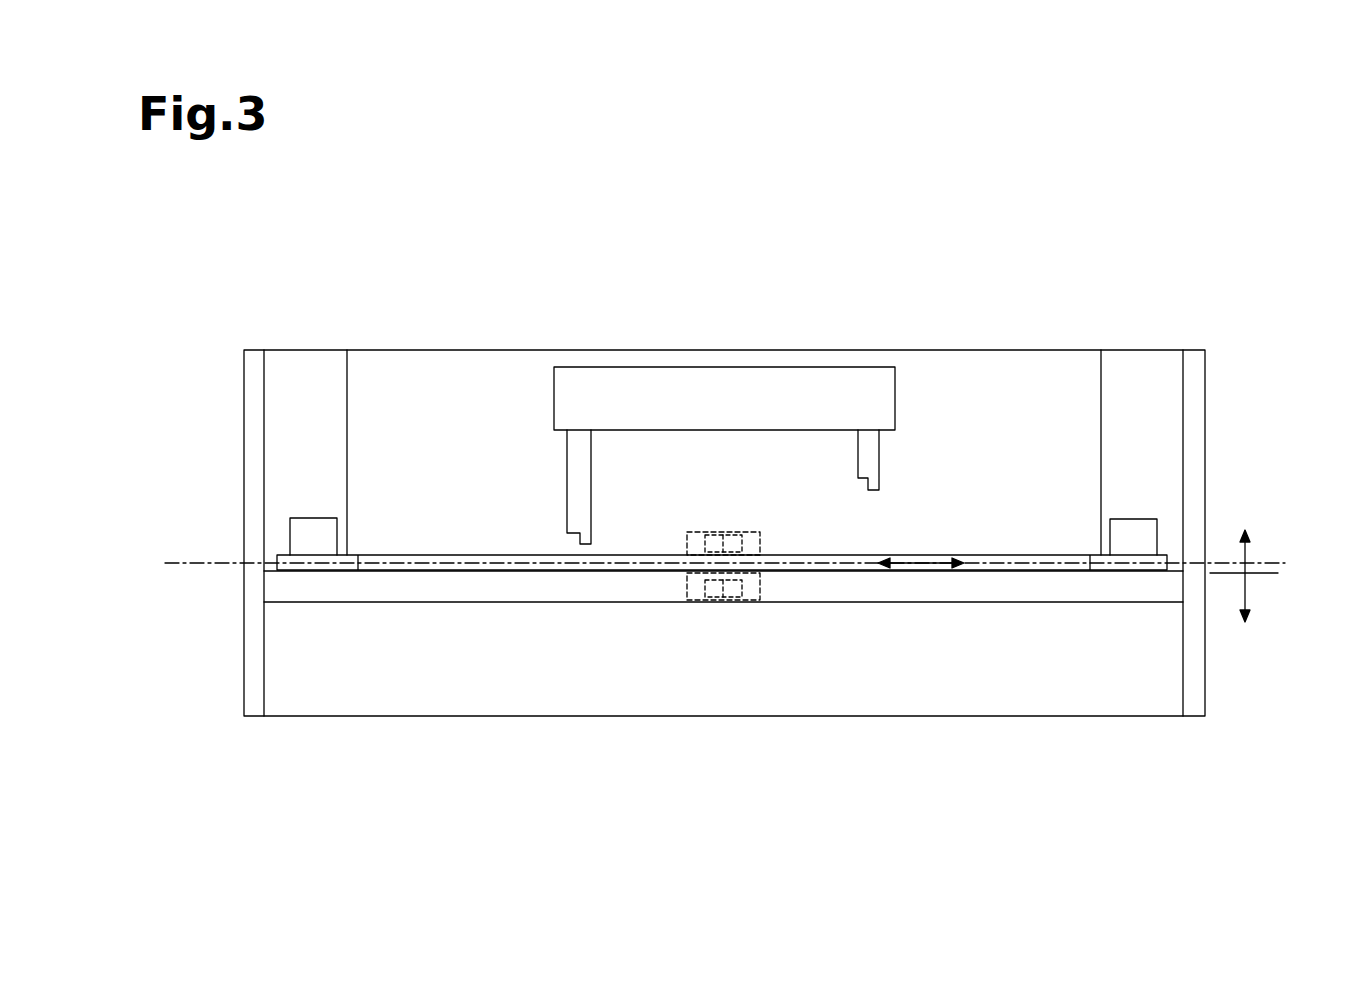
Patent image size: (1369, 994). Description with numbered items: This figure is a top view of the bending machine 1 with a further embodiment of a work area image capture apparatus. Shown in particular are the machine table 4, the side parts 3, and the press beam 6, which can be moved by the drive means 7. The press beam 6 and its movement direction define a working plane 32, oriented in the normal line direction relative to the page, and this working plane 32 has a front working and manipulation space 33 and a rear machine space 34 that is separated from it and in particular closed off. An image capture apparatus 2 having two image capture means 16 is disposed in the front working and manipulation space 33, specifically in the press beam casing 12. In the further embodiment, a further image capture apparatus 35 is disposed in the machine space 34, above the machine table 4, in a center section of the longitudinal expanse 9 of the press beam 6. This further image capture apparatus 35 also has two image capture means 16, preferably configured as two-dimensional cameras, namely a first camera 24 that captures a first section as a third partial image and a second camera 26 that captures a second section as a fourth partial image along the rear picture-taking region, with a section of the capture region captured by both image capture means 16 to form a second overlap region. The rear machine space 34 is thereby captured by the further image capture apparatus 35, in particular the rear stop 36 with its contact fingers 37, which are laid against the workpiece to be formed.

The bending machine 1 is at (258, 327).
The image capture apparatus 2 is at (752, 600).
The side parts 3 is at (257, 420).
The machine table 4 is at (1140, 700).
The press beam 6 is at (1027, 558).
The drive means 7 is at (297, 538).
The longitudinal expanse 9 is at (920, 567).
The press beam casing 12 is at (1043, 587).
The image capture means 16 is at (712, 531).
The first camera 24 is at (760, 545).
The second camera 26 is at (688, 544).
The working plane 32 is at (197, 560).
The front working and manipulation space 33 is at (1250, 593).
The rear machine space 34 is at (1258, 552).
The further image capture apparatus 35 is at (747, 538).
The rear stop 36 is at (903, 372).
The contact fingers 37 is at (575, 505).